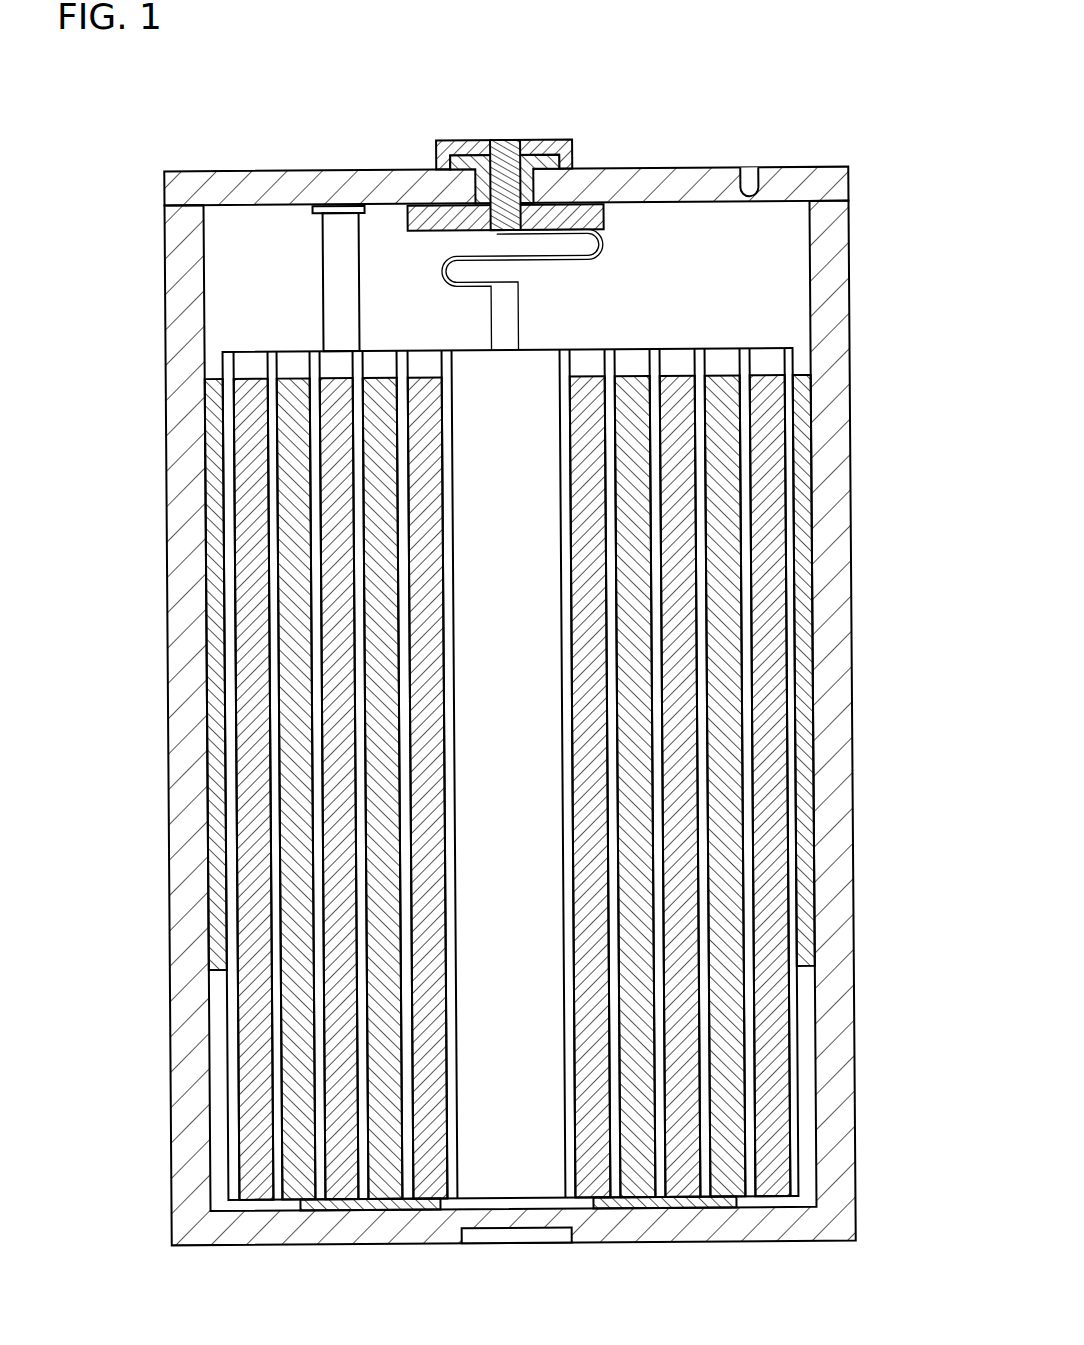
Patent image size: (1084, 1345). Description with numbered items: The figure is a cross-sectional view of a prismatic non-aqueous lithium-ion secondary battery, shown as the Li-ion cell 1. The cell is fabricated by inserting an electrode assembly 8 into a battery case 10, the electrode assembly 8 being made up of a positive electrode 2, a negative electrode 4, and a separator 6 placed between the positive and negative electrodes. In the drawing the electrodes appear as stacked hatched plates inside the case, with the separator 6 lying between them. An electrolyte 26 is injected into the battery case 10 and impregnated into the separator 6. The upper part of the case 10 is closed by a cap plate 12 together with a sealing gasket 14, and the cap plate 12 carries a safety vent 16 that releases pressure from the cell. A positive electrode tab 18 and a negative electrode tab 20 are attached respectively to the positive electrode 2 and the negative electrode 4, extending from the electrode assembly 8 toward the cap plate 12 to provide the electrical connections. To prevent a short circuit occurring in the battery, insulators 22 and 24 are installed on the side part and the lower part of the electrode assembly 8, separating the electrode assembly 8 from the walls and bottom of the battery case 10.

The Li-ion cell 1 is at (881, 370).
The positive electrode 2 is at (768, 1037).
The negative electrode 4 is at (296, 1000).
The separator 6 is at (275, 1126).
The electrode assembly 8 is at (698, 325).
The battery case 10 is at (185, 316).
The cap plate 12 is at (628, 169).
The sealing gasket 14 is at (449, 140).
The safety vent 16 is at (754, 169).
The positive electrode tab 18 is at (347, 232).
The negative electrode tab 20 is at (501, 140).
The insulator 22 is at (218, 659).
The insulator 24 is at (352, 1204).
The electrolyte 26 is at (745, 1100).